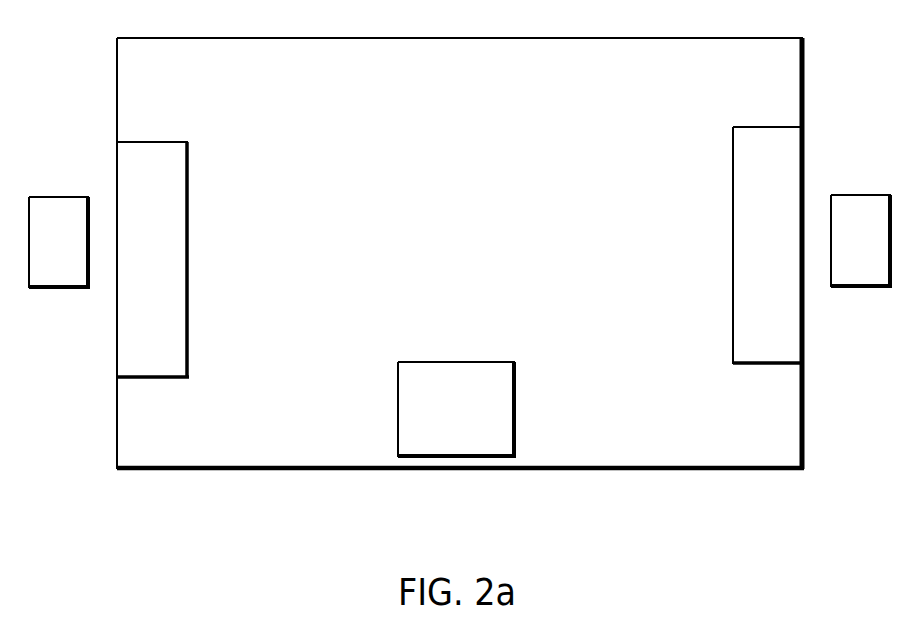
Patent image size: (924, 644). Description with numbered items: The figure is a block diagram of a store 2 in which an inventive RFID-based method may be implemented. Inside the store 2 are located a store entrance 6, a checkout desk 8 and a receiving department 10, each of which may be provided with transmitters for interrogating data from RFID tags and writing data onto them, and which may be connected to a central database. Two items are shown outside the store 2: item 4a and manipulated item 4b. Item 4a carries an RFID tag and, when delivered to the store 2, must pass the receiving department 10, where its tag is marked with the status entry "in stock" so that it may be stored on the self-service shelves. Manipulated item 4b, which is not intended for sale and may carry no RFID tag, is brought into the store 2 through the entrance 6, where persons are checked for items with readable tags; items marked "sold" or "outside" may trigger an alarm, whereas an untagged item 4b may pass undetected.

The store 2 is at (116, 50).
The item 4a is at (861, 241).
The manipulated item 4b is at (59, 243).
The store entrance 6 is at (153, 260).
The checkout desk 8 is at (457, 410).
The receiving department 10 is at (767, 245).